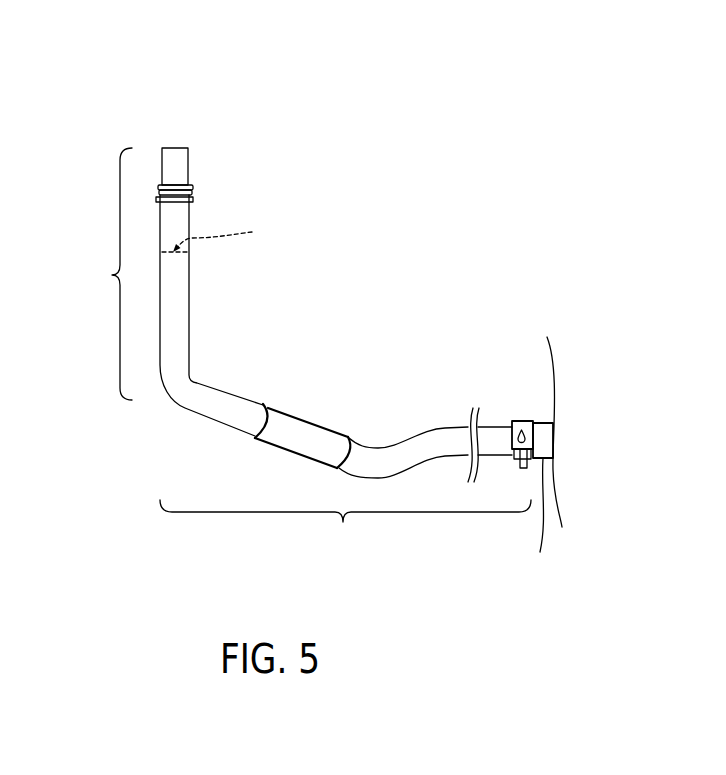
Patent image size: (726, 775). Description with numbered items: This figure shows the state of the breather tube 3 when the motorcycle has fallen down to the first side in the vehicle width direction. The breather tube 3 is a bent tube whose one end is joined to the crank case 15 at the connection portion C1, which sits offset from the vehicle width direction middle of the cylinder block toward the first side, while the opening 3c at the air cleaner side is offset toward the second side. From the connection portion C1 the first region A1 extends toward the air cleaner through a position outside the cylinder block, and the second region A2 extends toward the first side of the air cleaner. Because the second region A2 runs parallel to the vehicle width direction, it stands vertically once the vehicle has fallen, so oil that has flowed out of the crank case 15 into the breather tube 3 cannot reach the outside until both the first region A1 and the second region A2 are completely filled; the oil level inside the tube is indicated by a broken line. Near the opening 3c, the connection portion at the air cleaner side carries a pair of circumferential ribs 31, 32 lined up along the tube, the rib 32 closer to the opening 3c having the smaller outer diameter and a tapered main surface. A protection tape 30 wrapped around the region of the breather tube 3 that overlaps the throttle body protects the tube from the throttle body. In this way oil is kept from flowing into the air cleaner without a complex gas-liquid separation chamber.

The breather tube 3 is at (194, 315).
The opening 3c is at (177, 147).
The rib 32 is at (193, 189).
The rib 31 is at (195, 199).
The protection tape 30 is at (302, 428).
The connection portion C1 is at (537, 420).
The crank case 15 is at (546, 462).
The first region A1 is at (345, 529).
The second region A2 is at (108, 274).